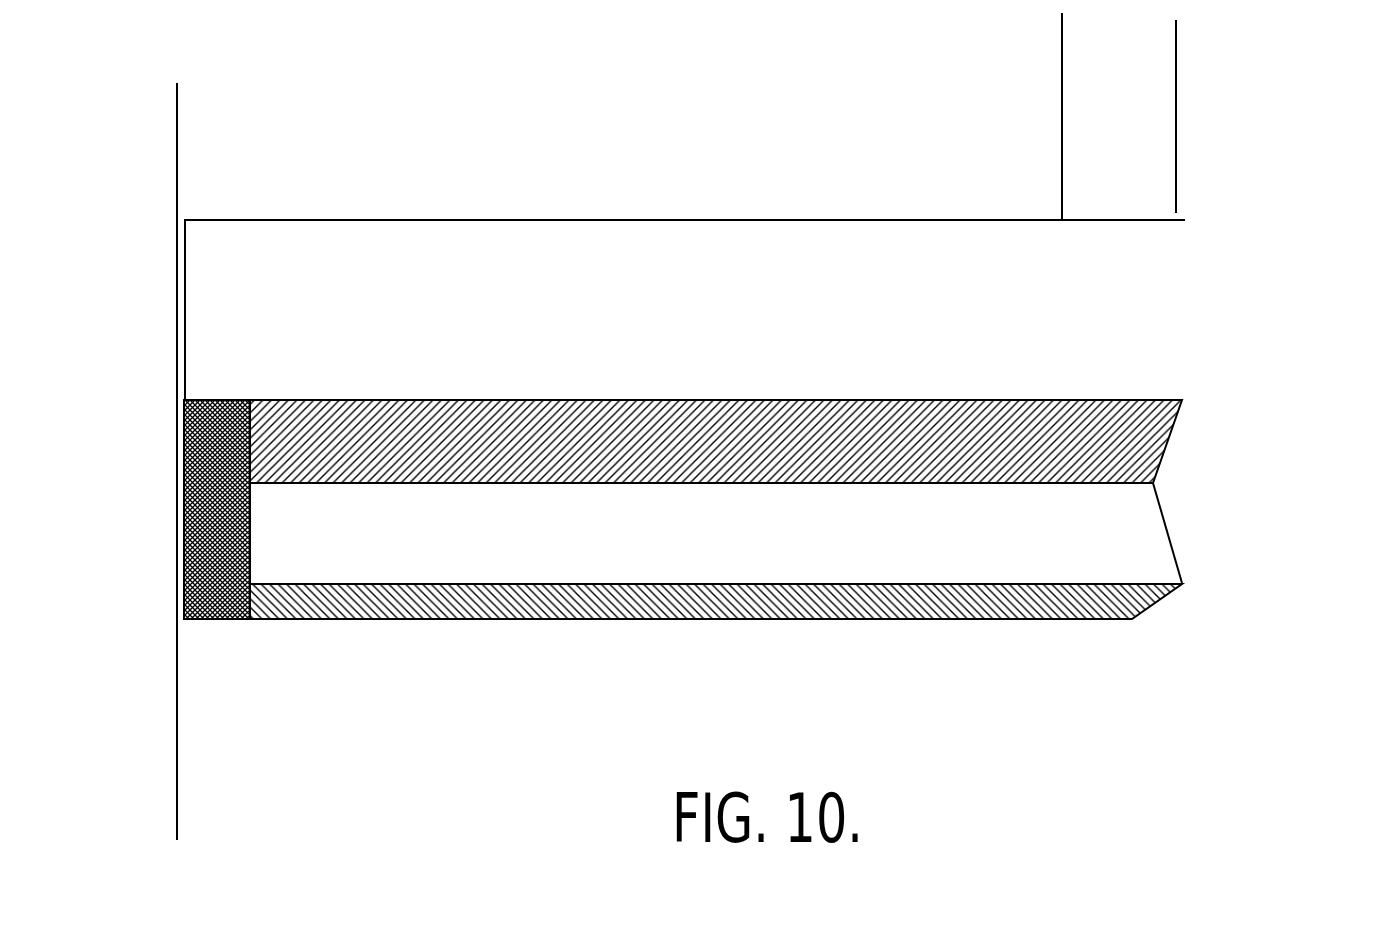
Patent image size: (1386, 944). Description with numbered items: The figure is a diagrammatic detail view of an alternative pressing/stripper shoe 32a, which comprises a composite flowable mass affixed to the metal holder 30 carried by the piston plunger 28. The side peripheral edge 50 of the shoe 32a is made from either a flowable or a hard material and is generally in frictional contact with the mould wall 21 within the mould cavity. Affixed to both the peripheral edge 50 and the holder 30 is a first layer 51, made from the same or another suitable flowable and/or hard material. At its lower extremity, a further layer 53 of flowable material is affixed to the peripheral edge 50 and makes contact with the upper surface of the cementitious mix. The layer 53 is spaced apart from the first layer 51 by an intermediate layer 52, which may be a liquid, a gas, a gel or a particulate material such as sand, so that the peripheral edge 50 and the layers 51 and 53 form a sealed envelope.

The mould wall 21 is at (157, 792).
The piston plunger 28 is at (1149, 104).
The metal holder 30 is at (895, 260).
The pressing/stripper shoe 32a is at (1200, 522).
The side peripheral edge 50 is at (230, 620).
The first layer 51 is at (447, 483).
The intermediate layer 52 is at (627, 557).
The further layer 53 is at (802, 620).